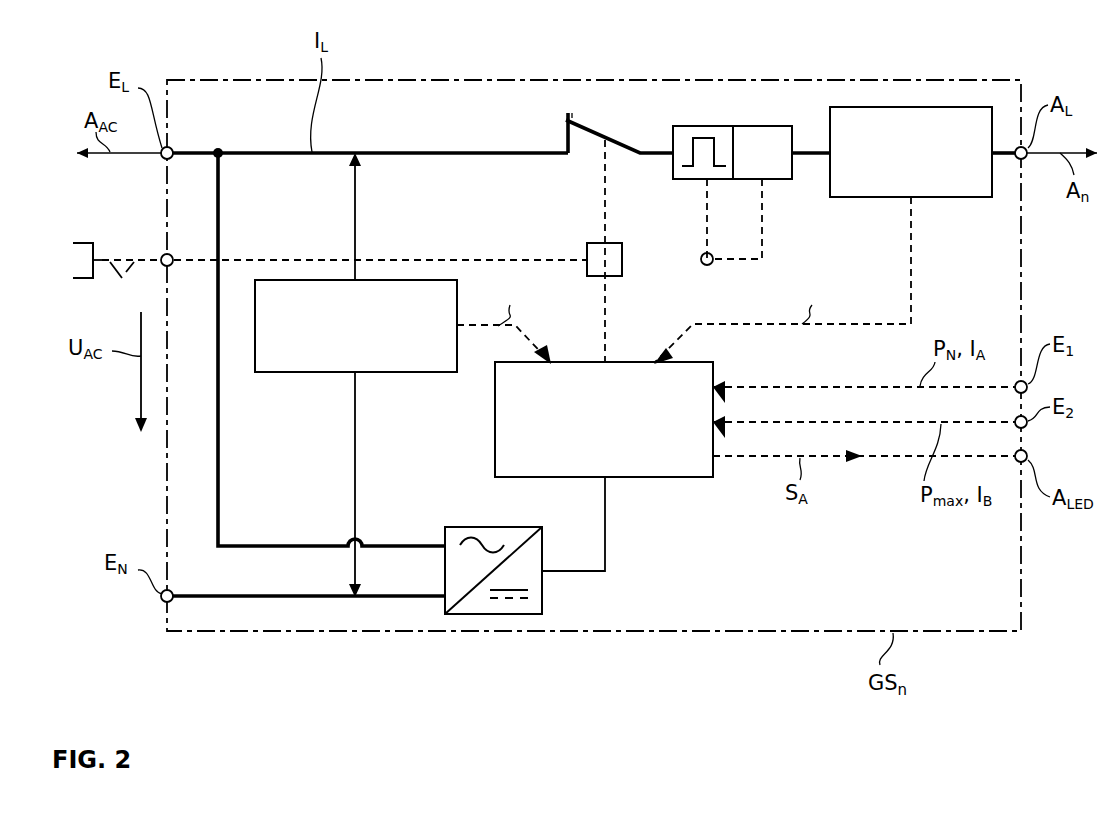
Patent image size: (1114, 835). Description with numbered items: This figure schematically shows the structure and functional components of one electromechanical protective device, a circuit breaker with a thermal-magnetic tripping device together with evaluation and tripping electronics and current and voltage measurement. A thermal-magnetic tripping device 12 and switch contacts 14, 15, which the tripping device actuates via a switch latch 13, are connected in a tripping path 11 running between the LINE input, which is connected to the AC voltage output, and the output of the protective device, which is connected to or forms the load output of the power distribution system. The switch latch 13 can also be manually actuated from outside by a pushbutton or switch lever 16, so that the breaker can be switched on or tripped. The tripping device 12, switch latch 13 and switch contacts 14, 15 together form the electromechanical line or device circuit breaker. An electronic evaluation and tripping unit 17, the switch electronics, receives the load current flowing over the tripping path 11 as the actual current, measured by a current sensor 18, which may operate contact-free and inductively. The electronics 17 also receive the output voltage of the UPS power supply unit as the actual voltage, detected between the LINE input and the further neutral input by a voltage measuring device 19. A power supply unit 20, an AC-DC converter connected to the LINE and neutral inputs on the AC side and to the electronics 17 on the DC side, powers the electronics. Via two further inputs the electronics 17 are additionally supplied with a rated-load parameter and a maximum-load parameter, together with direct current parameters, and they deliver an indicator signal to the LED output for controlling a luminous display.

The tripping path 11 is at (254, 152).
The thermal-magnetic tripping device 12 is at (719, 126).
The switch latch 13 is at (592, 243).
The switch contact 14 is at (562, 122).
The switch contact 15 is at (572, 118).
The pushbutton or switch lever 16 is at (78, 243).
The electronic evaluation and tripping unit 17 is at (655, 477).
The current sensor 18 is at (895, 107).
The voltage measuring device 19 is at (312, 372).
The power supply unit 20 is at (462, 527).